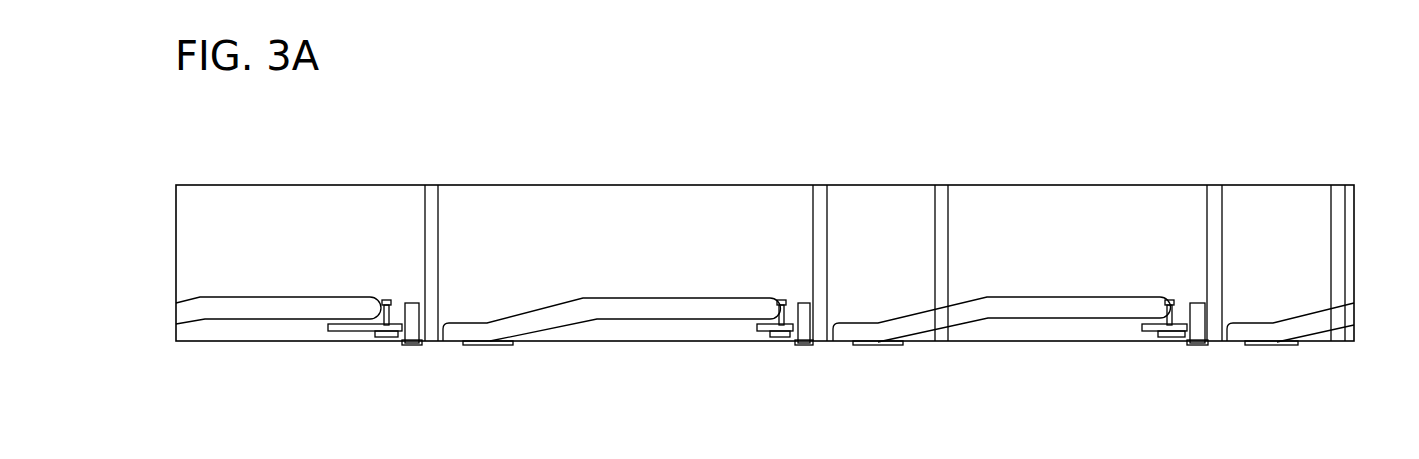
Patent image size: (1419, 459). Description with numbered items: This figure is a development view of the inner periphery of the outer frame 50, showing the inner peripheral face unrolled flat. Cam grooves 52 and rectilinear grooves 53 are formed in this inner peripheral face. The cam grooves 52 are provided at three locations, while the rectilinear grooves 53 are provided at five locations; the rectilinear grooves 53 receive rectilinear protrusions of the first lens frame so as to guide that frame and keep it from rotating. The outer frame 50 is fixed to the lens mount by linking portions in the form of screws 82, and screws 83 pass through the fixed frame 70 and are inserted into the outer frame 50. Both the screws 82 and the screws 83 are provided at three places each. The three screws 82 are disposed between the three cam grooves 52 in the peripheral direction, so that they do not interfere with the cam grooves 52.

The outer frame 50 is at (345, 157).
The cam grooves 52 is at (225, 305).
The rectilinear grooves 53 is at (434, 190).
The fixed frame 70 is at (365, 330).
The screws 82 is at (410, 330).
The screws 83 is at (383, 302).